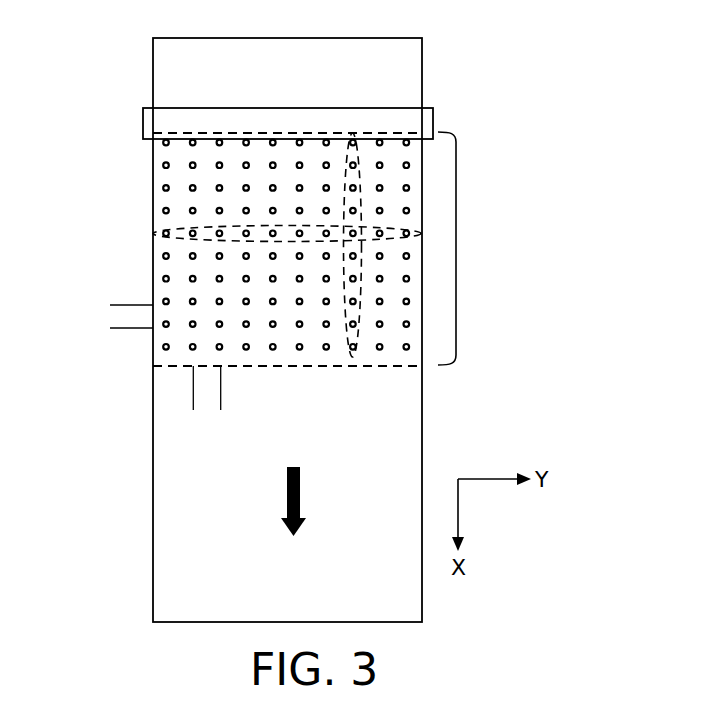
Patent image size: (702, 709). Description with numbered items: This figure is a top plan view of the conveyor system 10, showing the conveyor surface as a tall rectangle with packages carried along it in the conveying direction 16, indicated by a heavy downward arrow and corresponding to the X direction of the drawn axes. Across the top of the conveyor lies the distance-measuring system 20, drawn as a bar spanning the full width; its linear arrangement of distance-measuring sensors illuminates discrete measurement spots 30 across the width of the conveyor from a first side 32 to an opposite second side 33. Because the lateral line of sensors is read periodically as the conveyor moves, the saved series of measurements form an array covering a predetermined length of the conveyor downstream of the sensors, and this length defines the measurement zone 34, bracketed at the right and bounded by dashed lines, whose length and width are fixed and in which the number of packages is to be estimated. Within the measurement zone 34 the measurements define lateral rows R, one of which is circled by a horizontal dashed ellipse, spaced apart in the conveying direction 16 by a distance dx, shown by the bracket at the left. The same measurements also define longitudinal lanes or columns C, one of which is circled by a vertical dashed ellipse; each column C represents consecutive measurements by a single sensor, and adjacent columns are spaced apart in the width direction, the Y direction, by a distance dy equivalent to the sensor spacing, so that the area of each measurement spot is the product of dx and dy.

The conveyor system 10 is at (556, 80).
The conveying direction 16 is at (300, 488).
The distance-measuring system 20 is at (148, 122).
The measurement spots 30 is at (165, 167).
The first side 32 is at (153, 274).
The second side 33 is at (422, 235).
The measurement zone 34 is at (456, 247).
The columns C is at (345, 355).
The lateral rows R is at (153, 233).
The row spacing distance dx is at (103, 305).
The column spacing distance dy is at (221, 412).